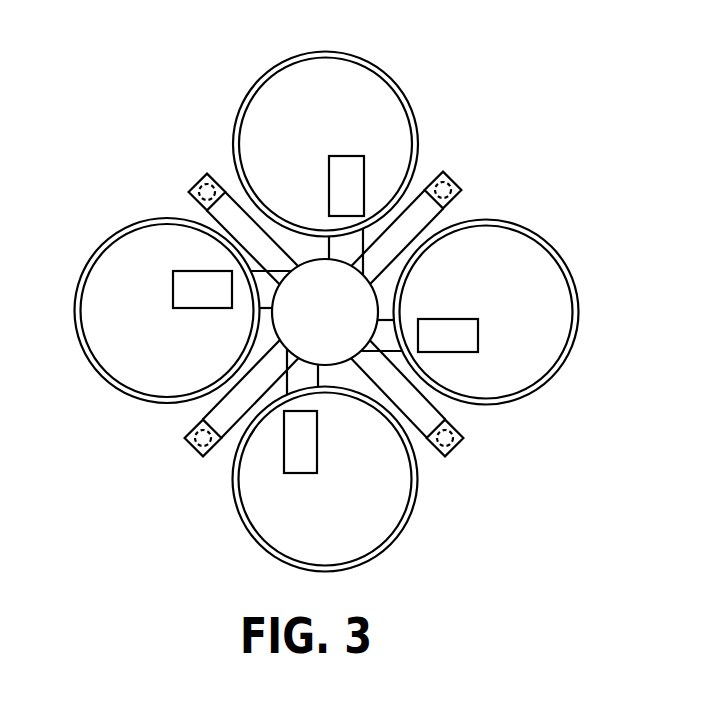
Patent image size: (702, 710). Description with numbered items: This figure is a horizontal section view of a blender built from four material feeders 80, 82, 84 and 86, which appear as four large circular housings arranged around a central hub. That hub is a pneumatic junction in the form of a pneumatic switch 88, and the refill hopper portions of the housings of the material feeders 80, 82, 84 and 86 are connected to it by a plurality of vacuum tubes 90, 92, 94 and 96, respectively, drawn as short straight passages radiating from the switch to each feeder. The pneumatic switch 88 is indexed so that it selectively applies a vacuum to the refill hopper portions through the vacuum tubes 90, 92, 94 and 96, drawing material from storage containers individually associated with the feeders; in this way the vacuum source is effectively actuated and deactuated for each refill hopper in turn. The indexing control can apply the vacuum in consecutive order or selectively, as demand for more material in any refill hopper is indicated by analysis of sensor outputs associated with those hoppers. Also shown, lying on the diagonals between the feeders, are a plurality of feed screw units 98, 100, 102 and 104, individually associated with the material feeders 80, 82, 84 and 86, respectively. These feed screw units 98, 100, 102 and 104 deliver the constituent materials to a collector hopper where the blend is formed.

The material feeder 80 is at (364, 64).
The material feeder 82 is at (557, 253).
The material feeder 84 is at (389, 546).
The material feeder 86 is at (75, 311).
The pneumatic switch 88 is at (306, 329).
The vacuum tube 90 is at (328, 243).
The vacuum tube 92 is at (396, 306).
The vacuum tube 94 is at (318, 372).
The vacuum tube 96 is at (262, 326).
The feed screw unit 98 is at (452, 182).
The feed screw unit 100 is at (462, 441).
The feed screw unit 102 is at (199, 449).
The feed screw unit 104 is at (204, 174).